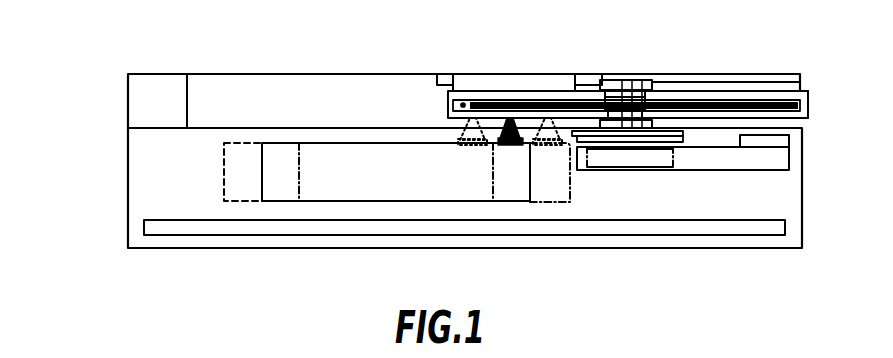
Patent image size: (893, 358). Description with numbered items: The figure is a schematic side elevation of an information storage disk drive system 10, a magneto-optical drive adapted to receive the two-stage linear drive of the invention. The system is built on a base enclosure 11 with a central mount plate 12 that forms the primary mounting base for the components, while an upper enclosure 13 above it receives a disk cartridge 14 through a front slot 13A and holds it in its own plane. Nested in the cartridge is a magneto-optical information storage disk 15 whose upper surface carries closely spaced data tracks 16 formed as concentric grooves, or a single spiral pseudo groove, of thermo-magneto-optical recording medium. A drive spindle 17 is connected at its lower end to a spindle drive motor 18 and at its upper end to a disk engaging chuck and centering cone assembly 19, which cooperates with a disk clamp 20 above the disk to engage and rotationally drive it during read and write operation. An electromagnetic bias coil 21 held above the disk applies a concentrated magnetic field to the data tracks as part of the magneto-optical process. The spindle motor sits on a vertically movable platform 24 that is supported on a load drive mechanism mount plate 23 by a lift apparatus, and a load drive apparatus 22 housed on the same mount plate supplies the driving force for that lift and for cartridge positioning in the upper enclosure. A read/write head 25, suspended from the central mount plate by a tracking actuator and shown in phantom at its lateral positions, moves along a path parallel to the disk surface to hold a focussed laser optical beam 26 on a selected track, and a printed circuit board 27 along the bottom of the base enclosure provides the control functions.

The information storage disk drive system 10 is at (127, 148).
The base enclosure 11 is at (127, 200).
The central mount plate 12 is at (187, 73).
The upper enclosure 13 is at (282, 73).
The front slot 13A is at (805, 84).
The disk cartridge 14 is at (447, 103).
The magneto-optical information storage disk 15 is at (495, 74).
The data tracks 16 is at (748, 96).
The drive spindle 17 is at (630, 92).
The spindle drive motor 18 is at (673, 170).
The disk engaging chuck and centering cone assembly 19 is at (656, 107).
The disk clamp 20 is at (650, 107).
The electromagnetic bias coil 21 is at (452, 93).
The load drive apparatus 22 is at (790, 140).
The load drive mechanism mount plate 23 is at (717, 170).
The vertically movable platform 24 is at (603, 170).
The read/write head 25 is at (418, 203).
The focussed laser optical beam 26 is at (532, 110).
The printed circuit board 27 is at (717, 236).